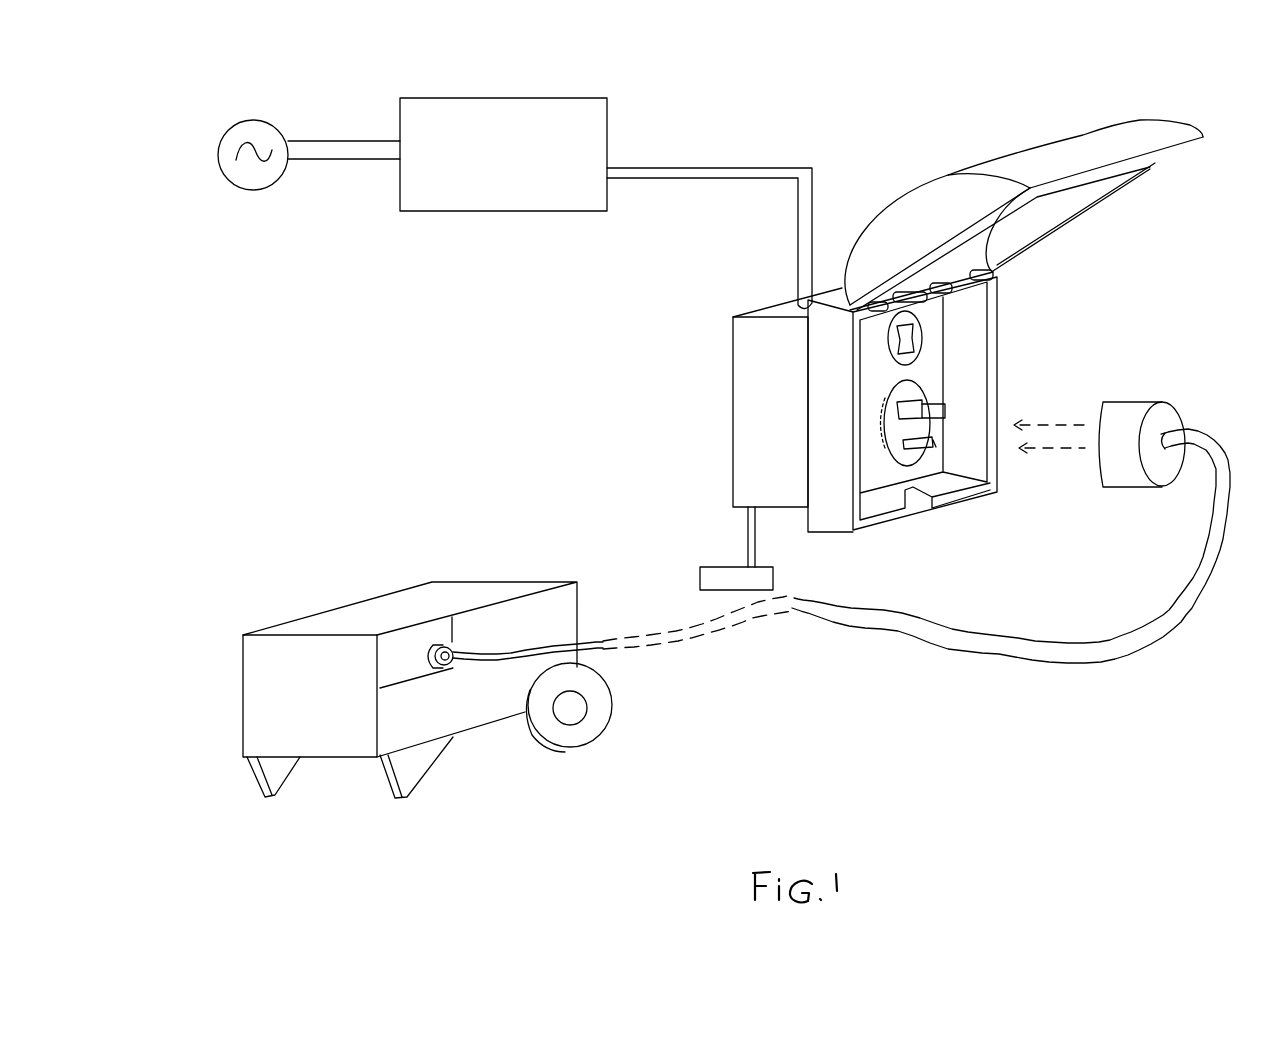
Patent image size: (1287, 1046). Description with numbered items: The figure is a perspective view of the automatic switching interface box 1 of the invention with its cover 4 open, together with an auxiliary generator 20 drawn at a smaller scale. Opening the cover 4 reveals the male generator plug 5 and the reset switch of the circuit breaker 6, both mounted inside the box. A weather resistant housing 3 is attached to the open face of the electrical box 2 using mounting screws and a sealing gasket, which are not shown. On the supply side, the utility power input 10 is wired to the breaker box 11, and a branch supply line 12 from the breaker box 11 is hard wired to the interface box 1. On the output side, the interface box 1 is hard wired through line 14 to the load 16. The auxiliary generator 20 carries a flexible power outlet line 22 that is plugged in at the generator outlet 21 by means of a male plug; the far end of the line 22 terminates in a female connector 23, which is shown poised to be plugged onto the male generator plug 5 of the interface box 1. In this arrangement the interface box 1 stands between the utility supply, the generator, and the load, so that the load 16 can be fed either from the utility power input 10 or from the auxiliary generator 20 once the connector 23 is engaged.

The automatic switching interface box 1 is at (1157, 258).
The electrical box 2 is at (745, 417).
The weather resistant housing 3 is at (843, 518).
The cover 4 is at (1170, 128).
The male generator plug 5 is at (927, 385).
The circuit breaker 6 is at (928, 338).
The utility power input 10 is at (238, 103).
The breaker box 11 is at (540, 74).
The branch supply line 12 is at (722, 186).
The line 14 is at (743, 523).
The load 16 is at (695, 580).
The auxiliary generator 20 is at (397, 570).
The generator outlet 21 is at (443, 640).
The flexible power outlet line 22 is at (858, 625).
The female connector 23 is at (1155, 392).